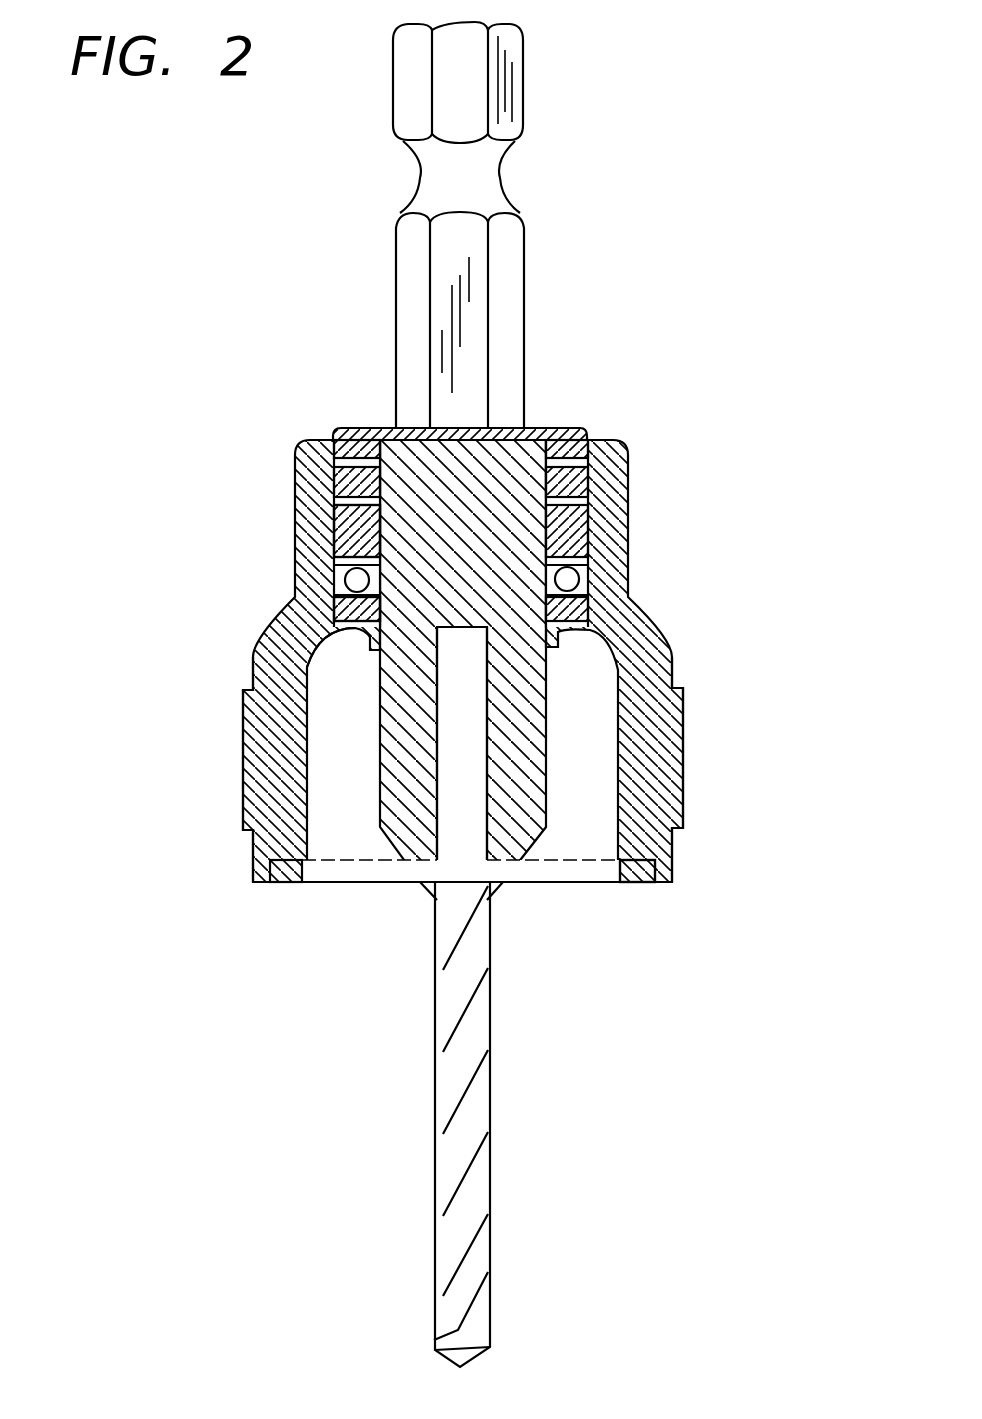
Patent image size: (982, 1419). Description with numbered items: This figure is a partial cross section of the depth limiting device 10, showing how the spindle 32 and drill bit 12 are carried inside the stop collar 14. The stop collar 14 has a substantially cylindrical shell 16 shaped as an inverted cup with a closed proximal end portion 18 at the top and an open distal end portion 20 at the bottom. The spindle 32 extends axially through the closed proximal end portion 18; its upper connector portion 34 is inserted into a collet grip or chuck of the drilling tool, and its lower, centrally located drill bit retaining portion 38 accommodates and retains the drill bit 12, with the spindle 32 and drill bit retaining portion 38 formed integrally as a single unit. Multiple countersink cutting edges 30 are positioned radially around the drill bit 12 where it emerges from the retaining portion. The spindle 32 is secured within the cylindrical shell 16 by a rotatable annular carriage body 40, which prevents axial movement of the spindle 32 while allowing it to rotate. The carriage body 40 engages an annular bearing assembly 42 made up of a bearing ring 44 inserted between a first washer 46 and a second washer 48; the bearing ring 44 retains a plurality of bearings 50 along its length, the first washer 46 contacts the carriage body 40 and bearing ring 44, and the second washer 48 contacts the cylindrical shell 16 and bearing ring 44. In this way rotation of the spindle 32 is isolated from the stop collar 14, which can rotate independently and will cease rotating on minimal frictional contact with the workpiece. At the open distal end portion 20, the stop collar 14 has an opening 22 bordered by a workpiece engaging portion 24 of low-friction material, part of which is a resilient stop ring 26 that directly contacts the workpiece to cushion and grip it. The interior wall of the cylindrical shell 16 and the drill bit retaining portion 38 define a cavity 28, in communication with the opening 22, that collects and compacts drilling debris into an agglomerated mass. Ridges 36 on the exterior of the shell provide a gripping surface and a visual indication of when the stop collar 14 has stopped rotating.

The depth limiting device 10 is at (710, 274).
The drill bit 12 is at (490, 1160).
The stop collar 14 is at (648, 617).
The cylindrical shell 16 is at (252, 680).
The closed proximal end portion 18 is at (594, 402).
The open distal end portion 20 is at (351, 950).
The opening 22 is at (345, 872).
The workpiece engaging portion 24 is at (665, 884).
The stop ring 26 is at (600, 884).
The cavity 28 is at (347, 682).
The countersink cutting edges 30 is at (468, 884).
The spindle 32 is at (390, 322).
The connector portion 34 is at (527, 88).
The ridges 36 is at (684, 800).
The drill bit retaining portion 38 is at (478, 746).
The carriage body 40 is at (587, 510).
The bearing assembly 42 is at (602, 577).
The bearing ring 44 is at (322, 578).
The first washer 46 is at (336, 555).
The second washer 48 is at (355, 618).
The bearings 50 is at (354, 585).